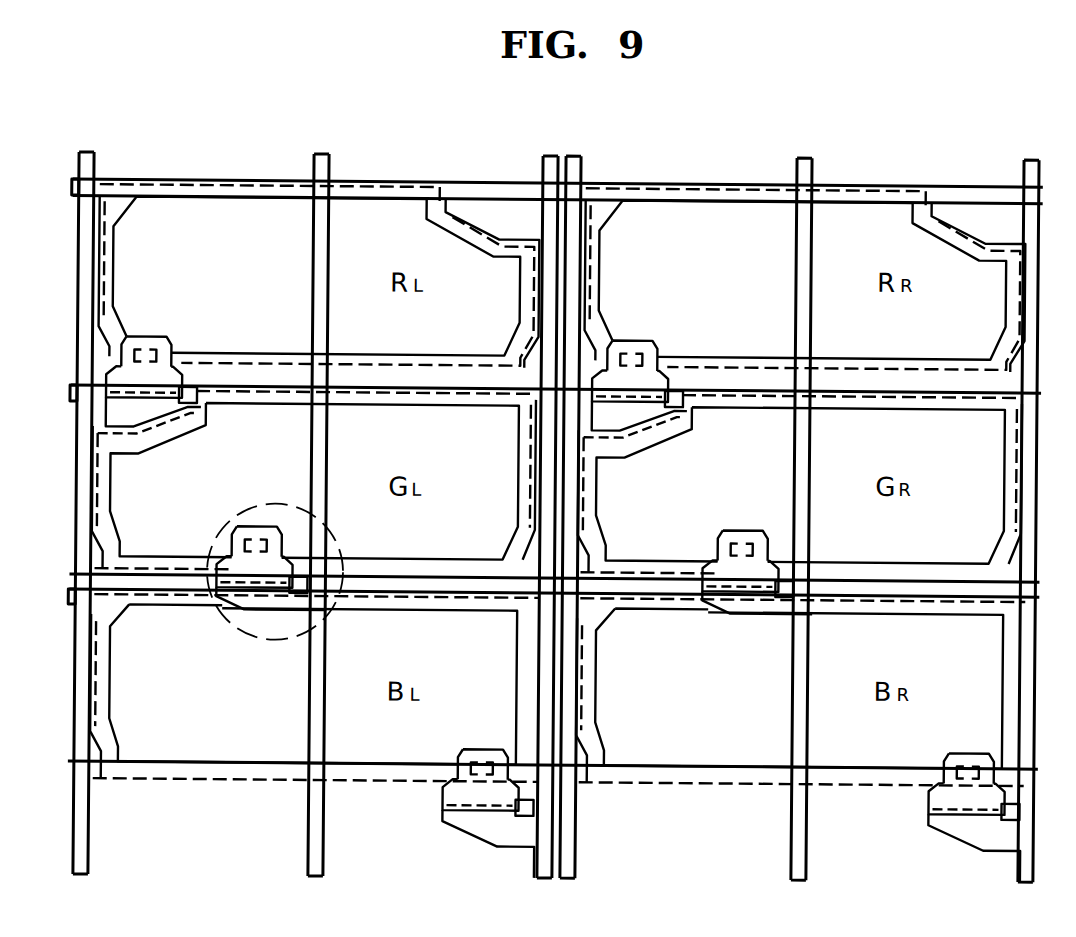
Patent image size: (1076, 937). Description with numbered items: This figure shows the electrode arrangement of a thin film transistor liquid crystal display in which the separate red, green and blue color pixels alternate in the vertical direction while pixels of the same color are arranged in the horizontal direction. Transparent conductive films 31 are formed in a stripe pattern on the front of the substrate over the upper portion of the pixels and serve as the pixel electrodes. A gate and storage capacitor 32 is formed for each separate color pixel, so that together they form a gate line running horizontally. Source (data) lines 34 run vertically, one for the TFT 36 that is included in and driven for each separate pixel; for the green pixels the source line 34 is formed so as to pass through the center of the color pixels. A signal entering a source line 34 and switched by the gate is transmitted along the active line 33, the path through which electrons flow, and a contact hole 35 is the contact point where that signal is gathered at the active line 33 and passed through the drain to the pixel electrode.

The transparent conductive film 31 is at (225, 512).
The gate and storage capacitor 32 is at (221, 401).
The active line 33 is at (123, 424).
The source (data) line 34 is at (315, 160).
The contact hole 35 is at (145, 348).
The TFT 36 is at (272, 511).